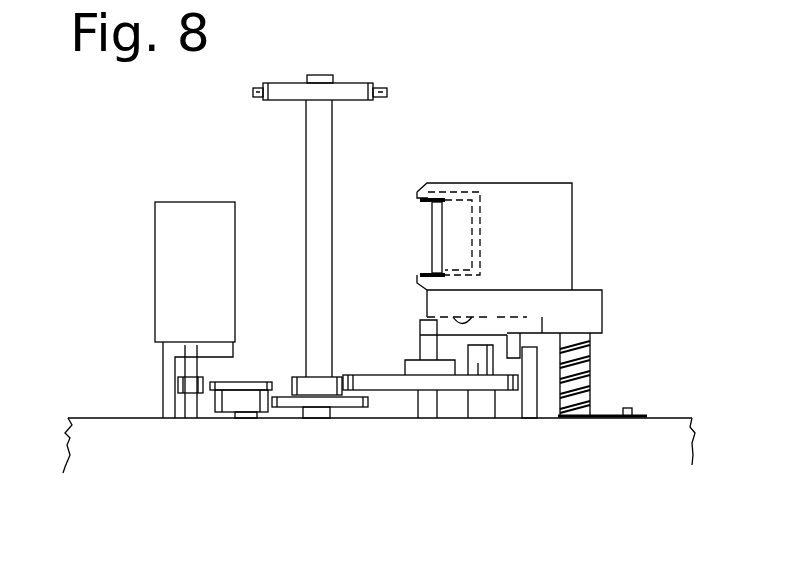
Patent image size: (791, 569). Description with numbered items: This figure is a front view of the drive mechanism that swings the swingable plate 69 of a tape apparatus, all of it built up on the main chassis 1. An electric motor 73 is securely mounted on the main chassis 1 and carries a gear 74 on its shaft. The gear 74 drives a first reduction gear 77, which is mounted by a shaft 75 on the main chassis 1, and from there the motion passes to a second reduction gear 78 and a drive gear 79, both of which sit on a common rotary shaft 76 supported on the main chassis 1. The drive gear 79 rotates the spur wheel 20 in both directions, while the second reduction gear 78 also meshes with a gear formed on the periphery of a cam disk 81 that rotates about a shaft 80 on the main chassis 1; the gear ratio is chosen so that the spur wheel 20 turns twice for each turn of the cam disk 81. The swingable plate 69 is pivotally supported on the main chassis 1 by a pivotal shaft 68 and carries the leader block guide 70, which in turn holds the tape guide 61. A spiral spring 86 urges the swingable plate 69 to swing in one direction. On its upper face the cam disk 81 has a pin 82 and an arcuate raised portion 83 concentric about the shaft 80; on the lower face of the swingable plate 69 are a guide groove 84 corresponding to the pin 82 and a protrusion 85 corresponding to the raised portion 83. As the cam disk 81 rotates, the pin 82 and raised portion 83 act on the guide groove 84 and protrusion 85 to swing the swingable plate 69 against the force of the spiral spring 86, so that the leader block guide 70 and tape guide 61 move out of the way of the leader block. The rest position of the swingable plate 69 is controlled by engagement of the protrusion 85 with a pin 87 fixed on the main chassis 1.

The main chassis 1 is at (98, 443).
The spur wheel 20 is at (388, 82).
The tape guide 61 is at (432, 233).
The pivotal shaft 68 is at (590, 362).
The swingable plate 69 is at (593, 318).
The leader block guide 70 is at (527, 208).
The electric motor 73 is at (182, 222).
The gear 74 is at (195, 398).
The shaft 75 is at (247, 417).
The rotary shaft 76 is at (318, 413).
The first reduction gear 77 is at (257, 418).
The second reduction gear 78 is at (338, 403).
The drive gear 79 is at (345, 90).
The shaft 80 is at (433, 410).
The cam disk 81 is at (397, 390).
The pin 82 is at (430, 348).
The arcuate raised portion 83 is at (493, 418).
The guide groove 84 is at (470, 317).
The protrusion 85 is at (520, 335).
The spiral spring 86 is at (590, 398).
The pin 87 is at (532, 393).